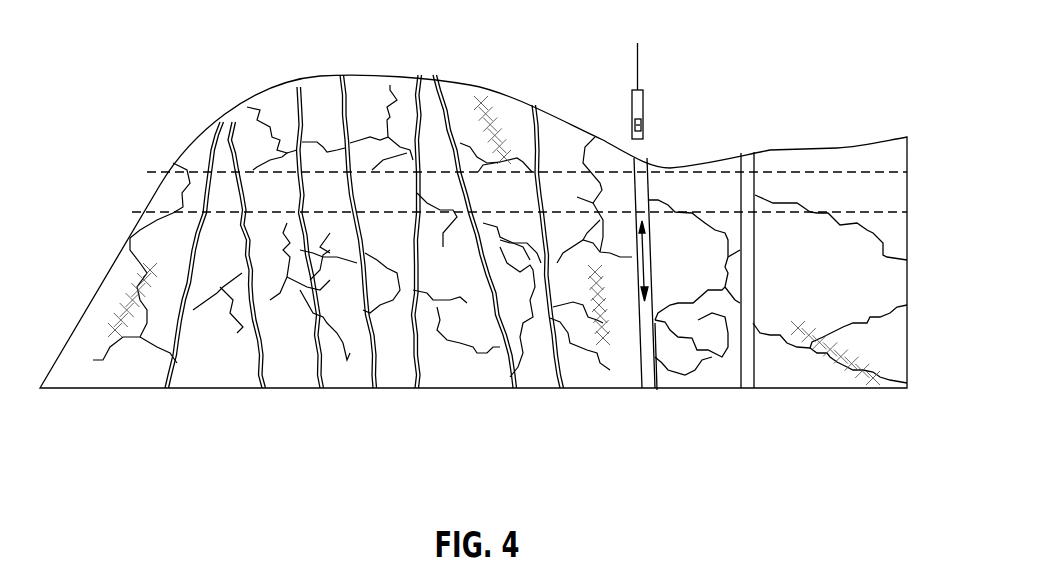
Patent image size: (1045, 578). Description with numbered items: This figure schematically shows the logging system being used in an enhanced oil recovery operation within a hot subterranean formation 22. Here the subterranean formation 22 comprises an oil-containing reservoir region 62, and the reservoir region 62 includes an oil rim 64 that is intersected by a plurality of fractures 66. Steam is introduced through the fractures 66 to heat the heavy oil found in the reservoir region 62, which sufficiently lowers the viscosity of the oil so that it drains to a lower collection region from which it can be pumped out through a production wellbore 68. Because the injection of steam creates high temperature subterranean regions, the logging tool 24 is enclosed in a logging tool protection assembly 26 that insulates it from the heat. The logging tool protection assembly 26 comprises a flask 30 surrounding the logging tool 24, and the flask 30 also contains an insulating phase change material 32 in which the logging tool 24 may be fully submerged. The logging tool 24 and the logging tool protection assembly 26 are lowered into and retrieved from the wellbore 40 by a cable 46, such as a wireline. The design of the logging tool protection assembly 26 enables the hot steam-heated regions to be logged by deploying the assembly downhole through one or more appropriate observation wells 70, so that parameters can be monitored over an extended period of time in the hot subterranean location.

The subterranean formation 22 is at (226, 125).
The logging tool 24 is at (642, 127).
The logging tool protection assembly 26 is at (654, 96).
The flask 30 is at (632, 117).
The phase change material 32 is at (642, 110).
The wellbore 40 is at (650, 236).
The cable 46 is at (638, 65).
The reservoir region 62 is at (155, 157).
The oil rim 64 is at (130, 238).
The fractures 66 is at (370, 357).
The production wellbore 68 is at (755, 280).
The observation wells 70 is at (668, 370).